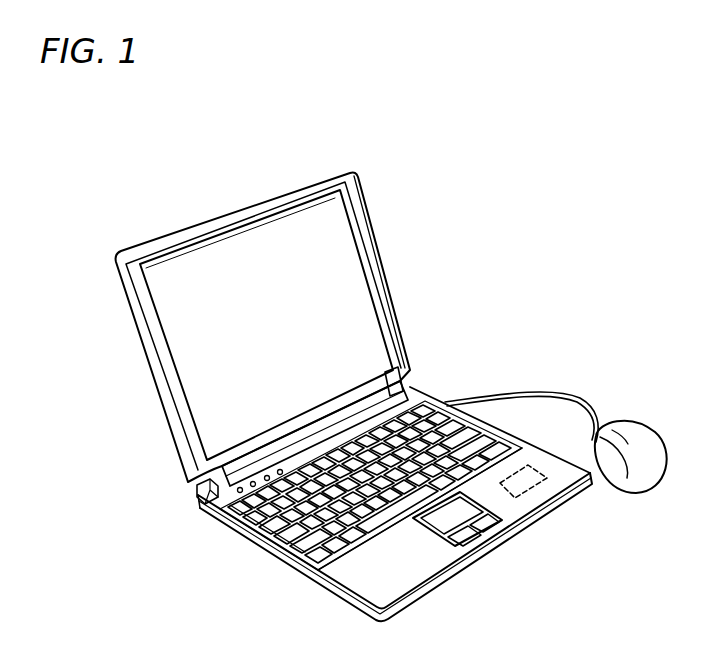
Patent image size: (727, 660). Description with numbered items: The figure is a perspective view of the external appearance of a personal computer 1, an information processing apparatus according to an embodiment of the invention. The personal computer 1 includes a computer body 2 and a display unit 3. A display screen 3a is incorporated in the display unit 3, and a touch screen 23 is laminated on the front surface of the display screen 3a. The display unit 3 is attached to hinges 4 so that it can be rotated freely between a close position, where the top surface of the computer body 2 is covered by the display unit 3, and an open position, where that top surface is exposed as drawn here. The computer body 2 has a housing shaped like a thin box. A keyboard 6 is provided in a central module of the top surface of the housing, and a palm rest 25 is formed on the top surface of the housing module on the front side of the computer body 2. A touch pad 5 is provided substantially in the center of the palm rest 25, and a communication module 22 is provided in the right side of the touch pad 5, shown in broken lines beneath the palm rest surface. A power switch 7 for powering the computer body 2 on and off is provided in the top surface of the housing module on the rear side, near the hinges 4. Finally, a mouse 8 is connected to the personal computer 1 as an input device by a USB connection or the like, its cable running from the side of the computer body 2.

The personal computer 1 is at (369, 130).
The computer body 2 is at (252, 573).
The display unit 3 is at (404, 256).
The display screen 3a is at (276, 242).
The hinges 4 is at (392, 392).
The touch pad 5 is at (473, 550).
The keyboard 6 is at (278, 550).
The power switch 7 is at (332, 440).
The mouse 8 is at (617, 430).
The communication module 22 is at (527, 488).
The touch screen 23 is at (197, 266).
The palm rest 25 is at (390, 578).